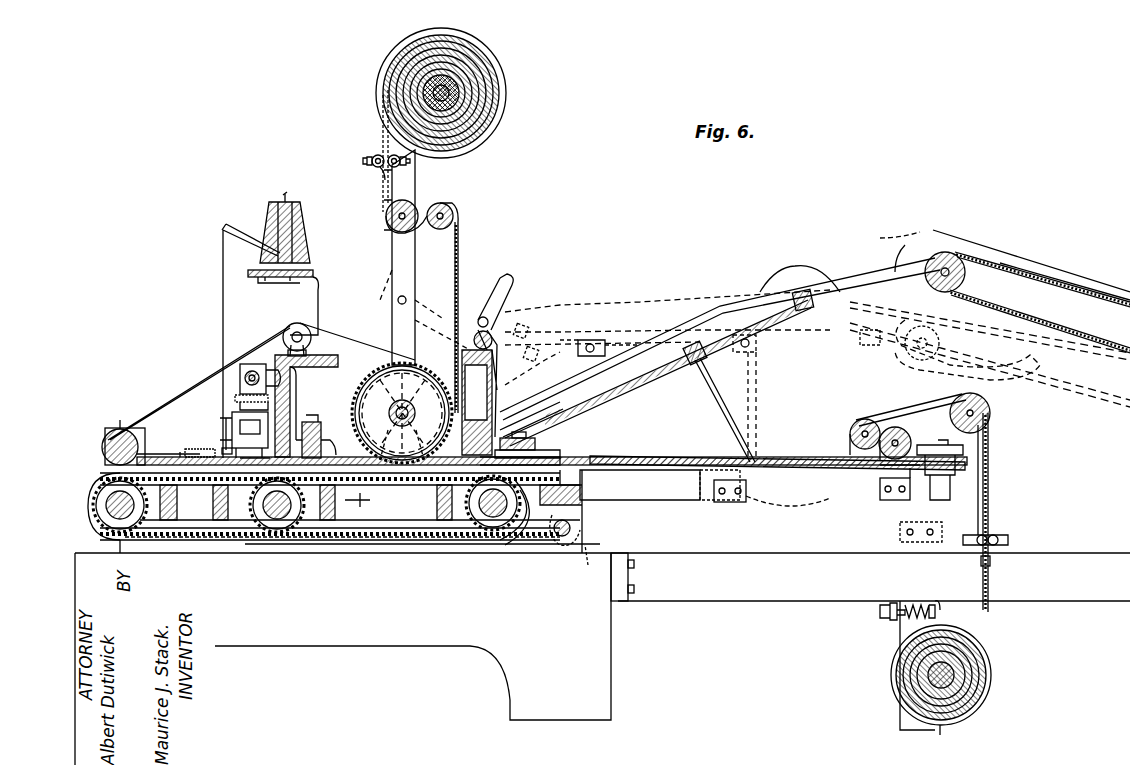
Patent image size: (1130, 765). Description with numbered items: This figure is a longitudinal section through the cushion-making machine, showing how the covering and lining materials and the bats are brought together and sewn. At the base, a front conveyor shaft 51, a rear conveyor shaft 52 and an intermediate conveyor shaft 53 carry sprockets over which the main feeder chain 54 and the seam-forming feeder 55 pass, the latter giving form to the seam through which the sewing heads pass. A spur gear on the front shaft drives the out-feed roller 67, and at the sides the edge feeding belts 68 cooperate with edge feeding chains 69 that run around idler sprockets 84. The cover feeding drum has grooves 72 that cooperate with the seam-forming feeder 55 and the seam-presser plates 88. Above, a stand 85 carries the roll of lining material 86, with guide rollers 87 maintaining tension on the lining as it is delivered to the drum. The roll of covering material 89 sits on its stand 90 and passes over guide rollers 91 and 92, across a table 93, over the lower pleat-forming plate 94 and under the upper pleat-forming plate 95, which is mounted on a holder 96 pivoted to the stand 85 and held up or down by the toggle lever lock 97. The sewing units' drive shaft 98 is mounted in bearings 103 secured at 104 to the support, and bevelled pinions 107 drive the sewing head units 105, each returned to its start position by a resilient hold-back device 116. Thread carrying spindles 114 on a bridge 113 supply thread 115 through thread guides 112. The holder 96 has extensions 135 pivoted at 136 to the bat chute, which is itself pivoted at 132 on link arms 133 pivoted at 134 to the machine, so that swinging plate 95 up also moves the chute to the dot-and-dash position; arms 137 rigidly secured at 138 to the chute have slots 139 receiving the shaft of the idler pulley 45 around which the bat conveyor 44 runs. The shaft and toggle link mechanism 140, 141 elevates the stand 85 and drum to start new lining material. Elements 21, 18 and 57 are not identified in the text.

The roll of lining material 86 is at (485, 110).
The guide rollers 87 is at (447, 205).
The stand 85 is at (392, 280).
The thread carrying spindles 114 is at (300, 190).
The thread 115 is at (310, 242).
The bridge 113 is at (255, 278).
The thread guides 112 is at (250, 258).
The edge feeding belts 68 is at (180, 380).
The bearing securement point 104 is at (285, 340).
The out-feed roller 67 is at (120, 418).
The bearings 103 is at (310, 372).
The resilient hold-back device 116 is at (318, 402).
The sewing units' drive shaft 98 is at (240, 370).
The bevelled pinions 107 is at (335, 366).
The sewing head units 105 is at (232, 422).
The edge feeding chains 69 is at (975, 463).
The gear wheel 21 is at (415, 412).
The hub shaft 18 is at (392, 405).
The grooves 72 is at (402, 430).
The seam-presser plates 88 is at (515, 320).
The toggle lever lock 97 is at (505, 295).
The holder 96 is at (532, 368).
The pivot of holder extensions 136 is at (615, 400).
The extensions 135 is at (560, 386).
The upper guide and pleat-forming plate 95 is at (560, 432).
The lower cover guide and pleat-forming plate 94 is at (565, 462).
The table 93 is at (700, 460).
The arms 137 is at (938, 370).
The rigid securement of arms 138 is at (806, 310).
The slots 139 is at (1005, 261).
The chute pivot 132 is at (740, 358).
The link arms 133 is at (770, 412).
The link arm pivot 134 is at (790, 505).
The idler pulley 45 is at (967, 280).
The bat conveyor 44 is at (1070, 412).
The guide rollers 92 is at (890, 425).
The guide rollers 91 is at (990, 425).
The idler sprockets 84 is at (940, 438).
The roll of covering material 89 is at (992, 680).
The stand 90 is at (900, 628).
The main feeder chain belt 54 is at (185, 542).
The front conveyor shaft 51 is at (110, 520).
The intermediate conveyor shaft 53 is at (280, 532).
The rear conveyor shaft 52 is at (490, 532).
The seam-forming feeder 55 is at (385, 542).
The chain links 57 is at (445, 542).
The toggle link mechanism shaft 140 is at (555, 542).
The toggle link 141 is at (591, 563).